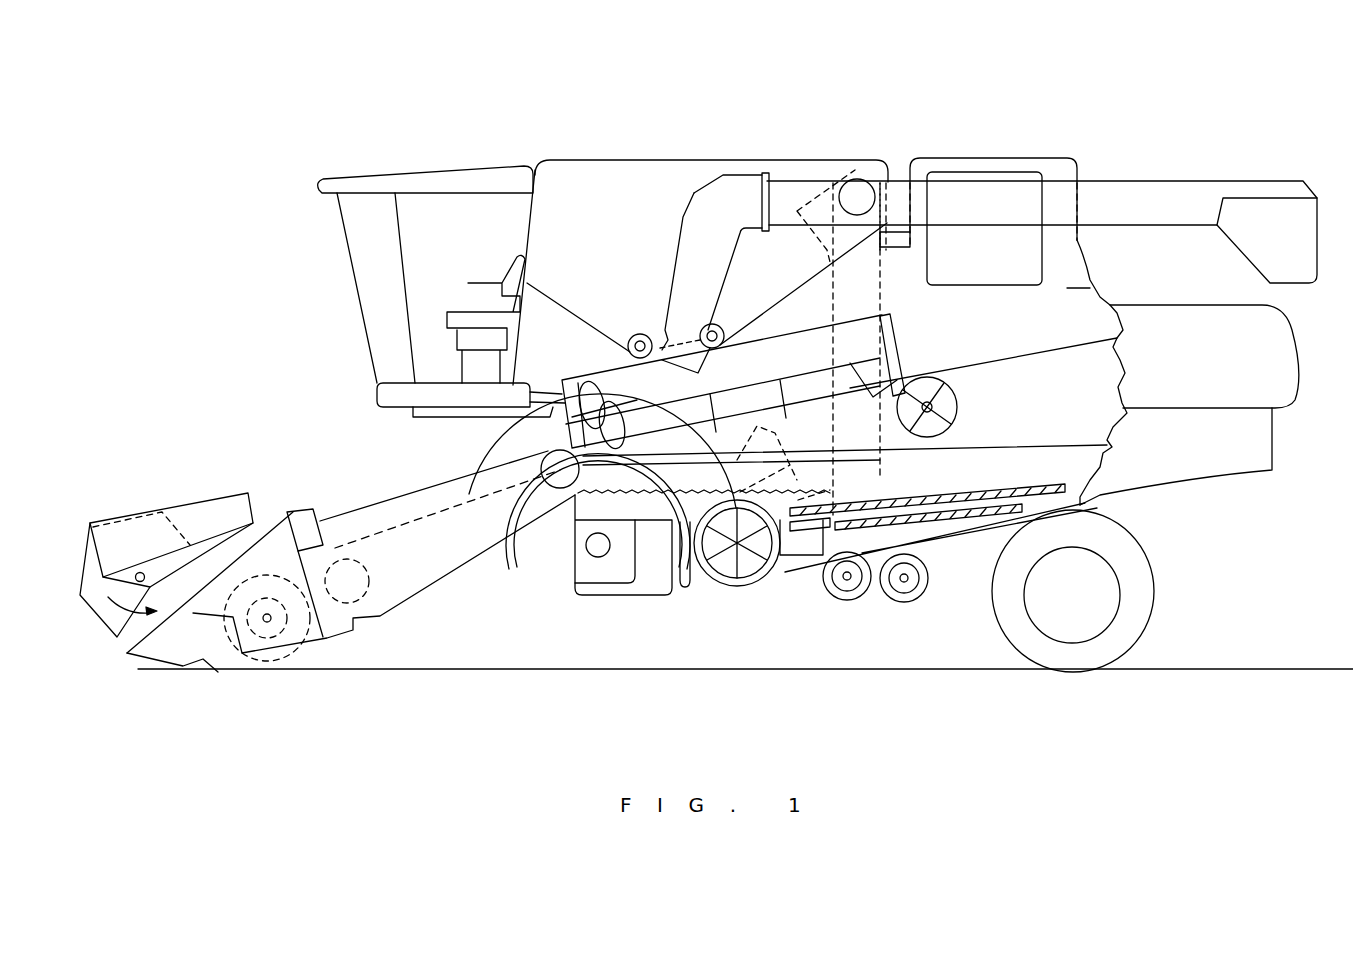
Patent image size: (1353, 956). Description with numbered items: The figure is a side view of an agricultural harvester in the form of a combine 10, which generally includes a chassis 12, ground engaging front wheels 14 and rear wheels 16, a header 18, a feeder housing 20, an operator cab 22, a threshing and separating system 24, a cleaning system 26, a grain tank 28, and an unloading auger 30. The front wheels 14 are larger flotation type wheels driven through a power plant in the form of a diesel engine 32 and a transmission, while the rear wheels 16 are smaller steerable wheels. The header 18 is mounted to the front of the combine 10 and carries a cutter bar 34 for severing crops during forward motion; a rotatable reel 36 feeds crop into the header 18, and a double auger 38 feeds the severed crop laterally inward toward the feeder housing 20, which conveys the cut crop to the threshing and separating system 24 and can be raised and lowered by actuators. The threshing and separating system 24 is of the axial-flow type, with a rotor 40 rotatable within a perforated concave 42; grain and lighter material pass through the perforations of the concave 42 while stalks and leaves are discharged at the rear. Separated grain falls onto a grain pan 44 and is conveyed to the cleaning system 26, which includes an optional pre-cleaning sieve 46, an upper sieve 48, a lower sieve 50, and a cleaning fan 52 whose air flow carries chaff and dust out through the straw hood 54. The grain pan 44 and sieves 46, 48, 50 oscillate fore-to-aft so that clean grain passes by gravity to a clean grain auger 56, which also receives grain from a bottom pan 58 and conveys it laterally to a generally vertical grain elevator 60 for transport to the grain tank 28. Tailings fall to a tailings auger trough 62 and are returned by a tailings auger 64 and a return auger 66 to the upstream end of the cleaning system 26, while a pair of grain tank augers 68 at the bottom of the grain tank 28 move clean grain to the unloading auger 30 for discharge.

The combine 10 is at (412, 132).
The chassis 12 is at (1088, 505).
The front wheels 14 is at (503, 625).
The rear wheels 16 is at (1115, 630).
The header 18 is at (176, 485).
The feeder housing 20 is at (392, 498).
The operator cab 22 is at (353, 268).
The threshing and separating system 24 is at (486, 438).
The cleaning system 26 is at (801, 603).
The grain tank 28 is at (596, 165).
The unloading auger 30 is at (1168, 187).
The diesel engine 32 is at (975, 172).
The cutter bar 34 is at (200, 665).
The reel 36 is at (83, 565).
The double auger 38 is at (268, 625).
The rotor 40 is at (585, 380).
The concave 42 is at (773, 365).
The grain pan 44 is at (577, 520).
The pre-cleaning sieve 46 is at (890, 495).
The upper sieve 48 is at (985, 492).
The lower sieve 50 is at (958, 520).
The cleaning fan 52 is at (738, 588).
The straw hood 54 is at (1283, 350).
The clean grain auger 56 is at (849, 605).
The bottom pan 58 is at (995, 515).
The grain elevator 60 is at (882, 292).
The tailings auger trough 62 is at (976, 520).
The tailings auger 64 is at (902, 605).
The return auger 66 is at (821, 468).
The grain tank augers 68 is at (640, 340).